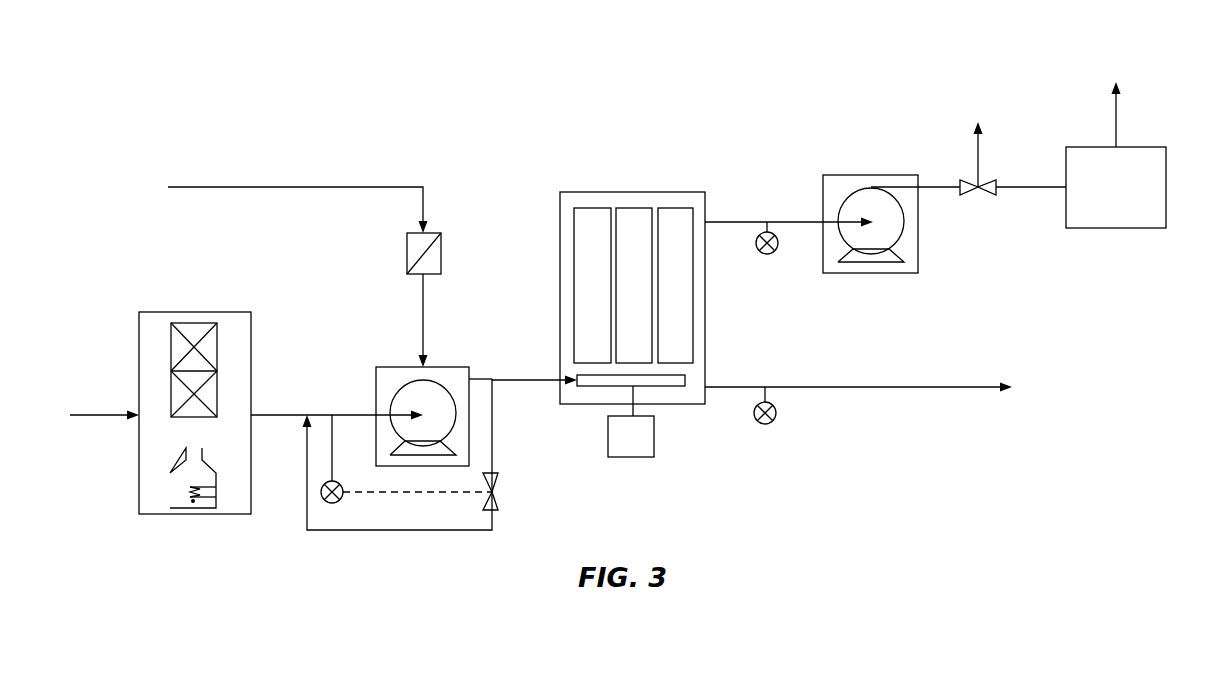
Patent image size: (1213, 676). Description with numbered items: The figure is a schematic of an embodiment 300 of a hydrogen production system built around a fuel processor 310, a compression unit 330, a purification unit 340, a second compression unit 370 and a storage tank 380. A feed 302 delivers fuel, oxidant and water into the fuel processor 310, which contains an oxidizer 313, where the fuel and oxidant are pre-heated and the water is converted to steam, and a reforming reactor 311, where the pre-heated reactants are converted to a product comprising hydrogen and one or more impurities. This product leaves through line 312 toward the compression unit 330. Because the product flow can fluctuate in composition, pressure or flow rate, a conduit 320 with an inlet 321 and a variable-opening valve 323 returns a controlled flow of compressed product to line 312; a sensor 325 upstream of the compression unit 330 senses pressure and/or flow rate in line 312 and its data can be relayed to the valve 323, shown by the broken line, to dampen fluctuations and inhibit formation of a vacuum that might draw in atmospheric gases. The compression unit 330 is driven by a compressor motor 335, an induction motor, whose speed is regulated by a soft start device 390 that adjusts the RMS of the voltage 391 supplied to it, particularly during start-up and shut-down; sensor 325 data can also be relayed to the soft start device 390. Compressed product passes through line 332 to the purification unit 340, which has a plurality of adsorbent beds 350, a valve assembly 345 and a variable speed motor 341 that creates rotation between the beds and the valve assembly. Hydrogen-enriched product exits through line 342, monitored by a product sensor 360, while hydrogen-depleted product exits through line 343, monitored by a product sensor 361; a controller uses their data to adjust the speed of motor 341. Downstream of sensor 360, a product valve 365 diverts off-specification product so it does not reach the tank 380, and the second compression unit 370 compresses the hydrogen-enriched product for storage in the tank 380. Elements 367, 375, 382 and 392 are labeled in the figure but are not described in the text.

The embodiment 300 is at (172, 72).
The feed 302 is at (100, 413).
The fuel processor 310 is at (158, 512).
The reforming reactor 311 is at (208, 350).
The line 312 is at (282, 417).
The oxidizer 313 is at (180, 476).
The conduit 320 is at (400, 480).
The inlet 321 is at (495, 383).
The variable-opening valve 323 is at (496, 481).
The sensor 325 is at (323, 496).
The compression unit 330 is at (388, 391).
The line 332 is at (477, 377).
The compressor motor 335 is at (405, 402).
The purification unit 340 is at (613, 312).
The variable speed motor 341 is at (631, 421).
The line 342 is at (722, 221).
The line 343 is at (940, 386).
The valve assembly 345 is at (672, 382).
The adsorbent beds 350 is at (634, 213).
The product sensor 360 is at (757, 249).
The product sensor 361 is at (777, 413).
The product valve 365 is at (985, 195).
The vent outlet 367 is at (980, 162).
The second compression unit 370 is at (894, 196).
The booster pump 375 is at (893, 230).
The tank 380 is at (1116, 187).
The tank outlet 382 is at (1117, 128).
The soft start device 390 is at (407, 246).
The voltage 391 is at (292, 186).
The chemical dosing line 392 is at (422, 298).